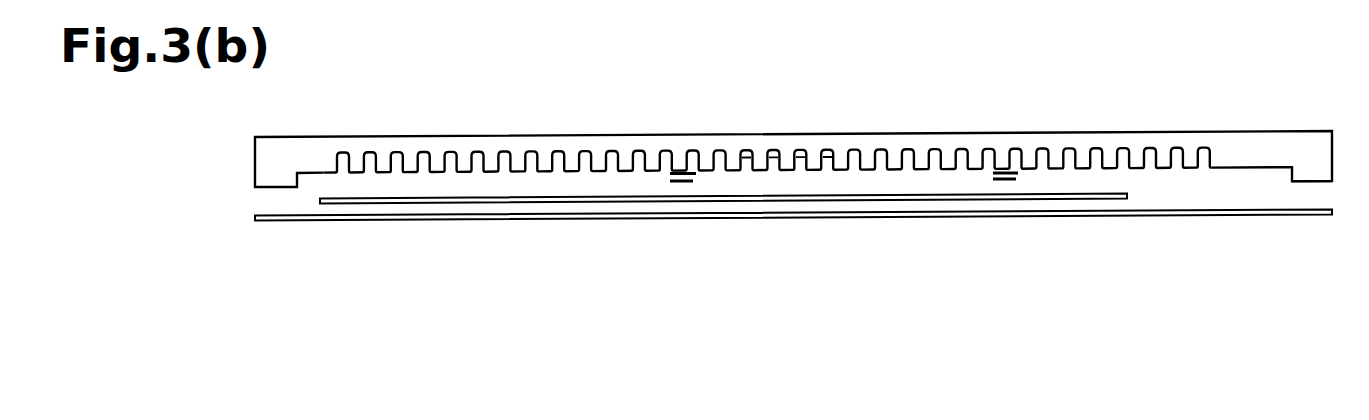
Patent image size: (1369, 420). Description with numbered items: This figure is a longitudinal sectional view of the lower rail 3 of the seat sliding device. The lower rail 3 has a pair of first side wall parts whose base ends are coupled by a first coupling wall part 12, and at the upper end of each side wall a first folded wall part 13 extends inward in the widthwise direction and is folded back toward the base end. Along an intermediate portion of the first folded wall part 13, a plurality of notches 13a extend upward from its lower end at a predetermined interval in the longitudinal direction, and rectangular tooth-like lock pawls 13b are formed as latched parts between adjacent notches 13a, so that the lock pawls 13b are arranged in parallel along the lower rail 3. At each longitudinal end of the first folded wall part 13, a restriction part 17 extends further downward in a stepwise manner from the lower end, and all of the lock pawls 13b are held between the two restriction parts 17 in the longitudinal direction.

The lower rail 3 is at (820, 218).
The first coupling wall part 12 is at (940, 218).
The first folded wall part 13 is at (793, 176).
The notches 13a is at (393, 158).
The lock pawls 13b is at (410, 173).
The restriction part 17 is at (273, 187).